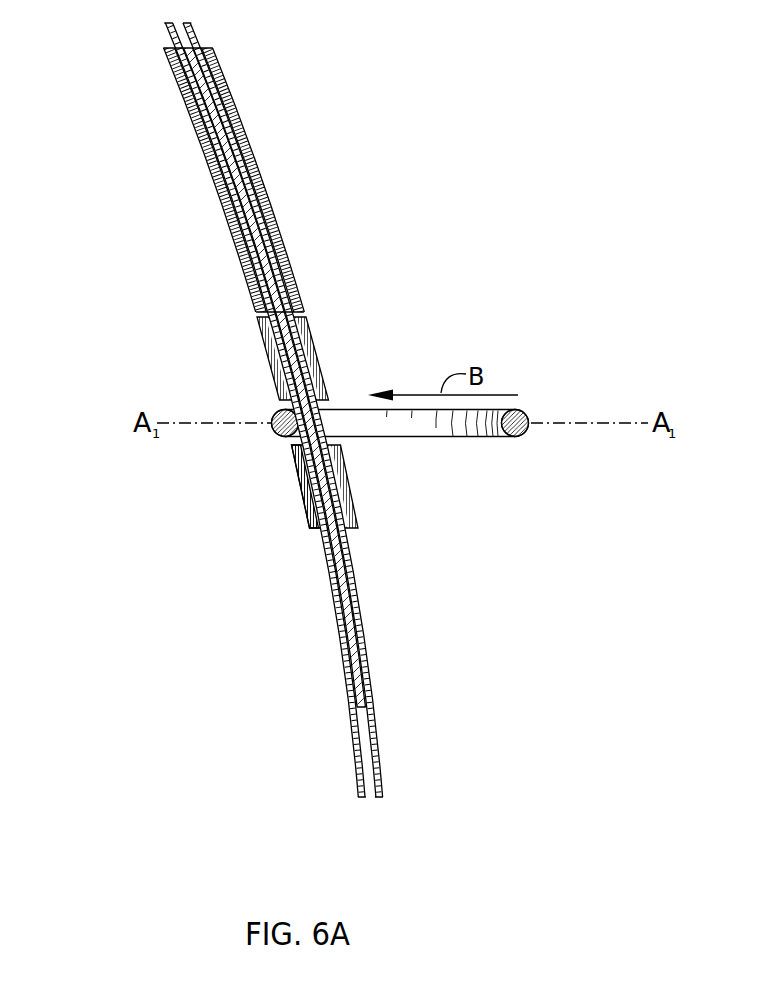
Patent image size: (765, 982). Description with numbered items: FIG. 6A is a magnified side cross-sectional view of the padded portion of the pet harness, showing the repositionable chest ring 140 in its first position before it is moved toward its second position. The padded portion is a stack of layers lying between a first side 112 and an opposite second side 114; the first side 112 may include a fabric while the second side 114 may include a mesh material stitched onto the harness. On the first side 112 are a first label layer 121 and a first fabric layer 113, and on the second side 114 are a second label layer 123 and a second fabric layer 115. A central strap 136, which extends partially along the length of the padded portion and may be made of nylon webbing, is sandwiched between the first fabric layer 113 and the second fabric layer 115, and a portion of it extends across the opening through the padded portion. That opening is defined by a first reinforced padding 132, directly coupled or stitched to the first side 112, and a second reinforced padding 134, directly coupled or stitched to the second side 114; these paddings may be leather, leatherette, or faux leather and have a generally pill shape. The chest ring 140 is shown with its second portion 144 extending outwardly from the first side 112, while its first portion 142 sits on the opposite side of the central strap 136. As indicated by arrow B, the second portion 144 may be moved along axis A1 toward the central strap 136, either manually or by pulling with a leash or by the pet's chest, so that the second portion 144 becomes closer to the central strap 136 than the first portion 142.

The first side 112 is at (216, 408).
The first fabric layer 113 is at (193, 40).
The second side 114 is at (203, 146).
The second fabric layer 115 is at (177, 42).
The first label layer 121 is at (226, 92).
The second label layer 123 is at (182, 83).
The central strap 136 is at (241, 193).
The first reinforced padding 132 is at (341, 478).
The second reinforced padding 134 is at (302, 477).
The chest ring 140 is at (445, 426).
The first portion 142 is at (286, 433).
The second portion 144 is at (521, 417).